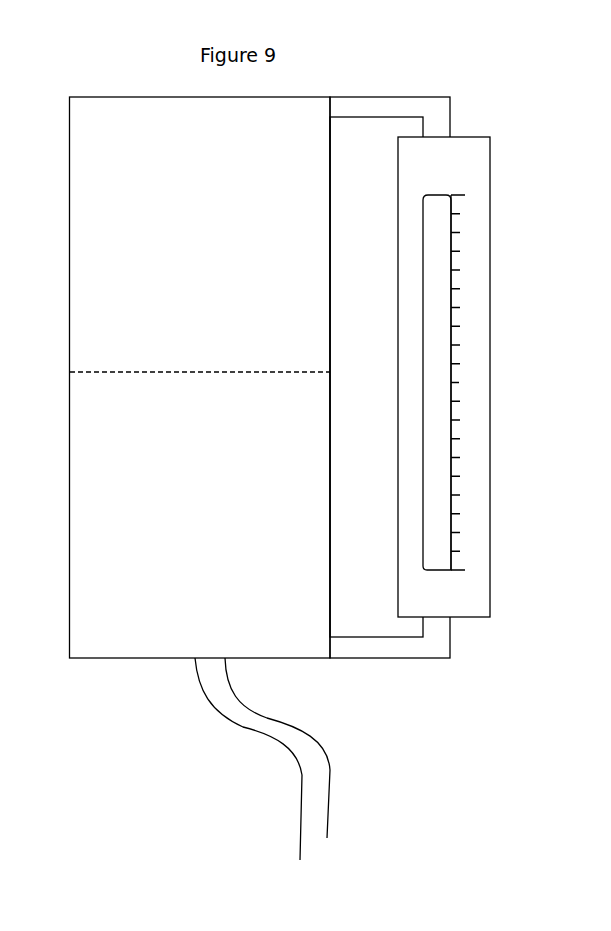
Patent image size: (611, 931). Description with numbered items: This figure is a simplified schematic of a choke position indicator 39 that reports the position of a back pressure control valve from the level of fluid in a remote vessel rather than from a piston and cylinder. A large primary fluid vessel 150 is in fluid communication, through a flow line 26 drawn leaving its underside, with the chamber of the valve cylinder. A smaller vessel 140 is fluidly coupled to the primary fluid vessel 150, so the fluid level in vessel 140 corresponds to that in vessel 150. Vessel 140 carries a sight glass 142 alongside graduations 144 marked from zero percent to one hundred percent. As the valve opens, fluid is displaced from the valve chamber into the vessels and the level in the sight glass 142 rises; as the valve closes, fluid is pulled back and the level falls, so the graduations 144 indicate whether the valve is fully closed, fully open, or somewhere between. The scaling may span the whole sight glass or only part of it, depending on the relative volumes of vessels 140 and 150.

The flow line 26 is at (307, 778).
The position indicator 39 is at (500, 320).
The vessel 140 is at (475, 619).
The sight glass 142 is at (420, 347).
The graduations 144 is at (472, 454).
The primary fluid vessel 150 is at (123, 658).